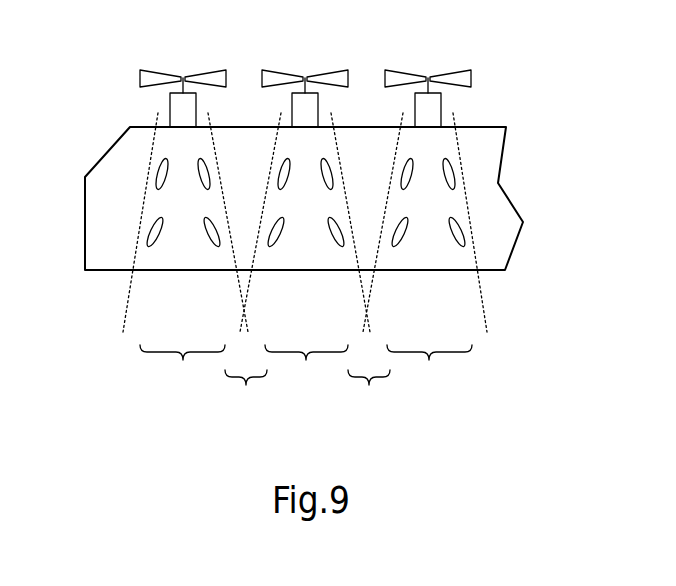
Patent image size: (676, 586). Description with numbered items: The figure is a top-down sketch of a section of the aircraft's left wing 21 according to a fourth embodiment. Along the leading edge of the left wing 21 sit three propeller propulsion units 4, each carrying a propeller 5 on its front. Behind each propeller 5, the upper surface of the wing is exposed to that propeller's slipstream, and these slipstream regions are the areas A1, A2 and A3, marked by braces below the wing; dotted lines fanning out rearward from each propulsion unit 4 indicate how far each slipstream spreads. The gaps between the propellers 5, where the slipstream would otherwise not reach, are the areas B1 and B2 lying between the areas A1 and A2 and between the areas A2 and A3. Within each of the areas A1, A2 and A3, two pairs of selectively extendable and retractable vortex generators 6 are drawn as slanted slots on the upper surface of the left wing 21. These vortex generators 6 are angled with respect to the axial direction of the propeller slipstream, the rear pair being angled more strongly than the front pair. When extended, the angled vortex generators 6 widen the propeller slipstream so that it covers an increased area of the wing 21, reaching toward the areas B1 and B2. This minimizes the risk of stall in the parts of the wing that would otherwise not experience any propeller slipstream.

The left wing 21 is at (499, 170).
The propeller 5 is at (165, 72).
The propeller propulsion unit 4 is at (441, 108).
The vortex generator 6 is at (157, 177).
The area A1 is at (182, 378).
The area B1 is at (246, 396).
The area A2 is at (306, 378).
The area B2 is at (369, 396).
The area A3 is at (429, 378).